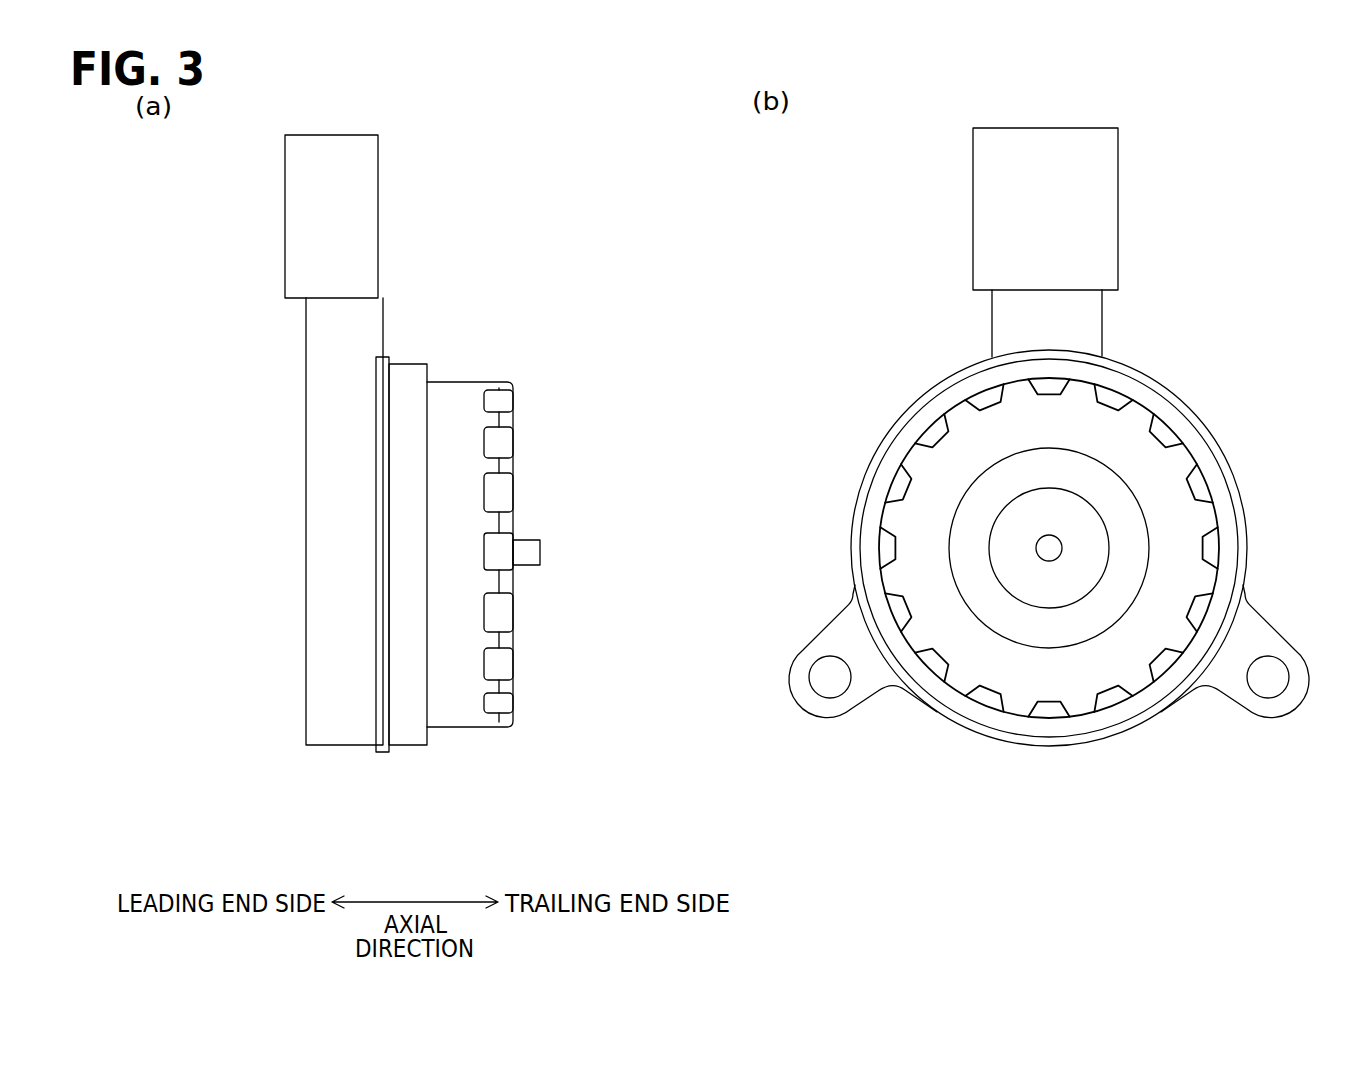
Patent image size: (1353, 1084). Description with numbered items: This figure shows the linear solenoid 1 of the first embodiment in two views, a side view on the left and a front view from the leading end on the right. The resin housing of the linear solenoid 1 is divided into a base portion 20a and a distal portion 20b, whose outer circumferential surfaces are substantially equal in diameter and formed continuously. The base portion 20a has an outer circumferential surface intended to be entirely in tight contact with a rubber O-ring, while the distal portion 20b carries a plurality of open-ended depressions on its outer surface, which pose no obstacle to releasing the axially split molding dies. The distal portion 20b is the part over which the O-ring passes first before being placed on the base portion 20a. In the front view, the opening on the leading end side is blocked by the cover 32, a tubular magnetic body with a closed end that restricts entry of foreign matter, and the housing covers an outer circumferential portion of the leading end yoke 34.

The linear solenoid 1 is at (512, 242).
The base portion 20a is at (441, 368).
The distal portion 20b is at (499, 355).
The cover 32 is at (1071, 509).
The leading end yoke 34 is at (1124, 525).